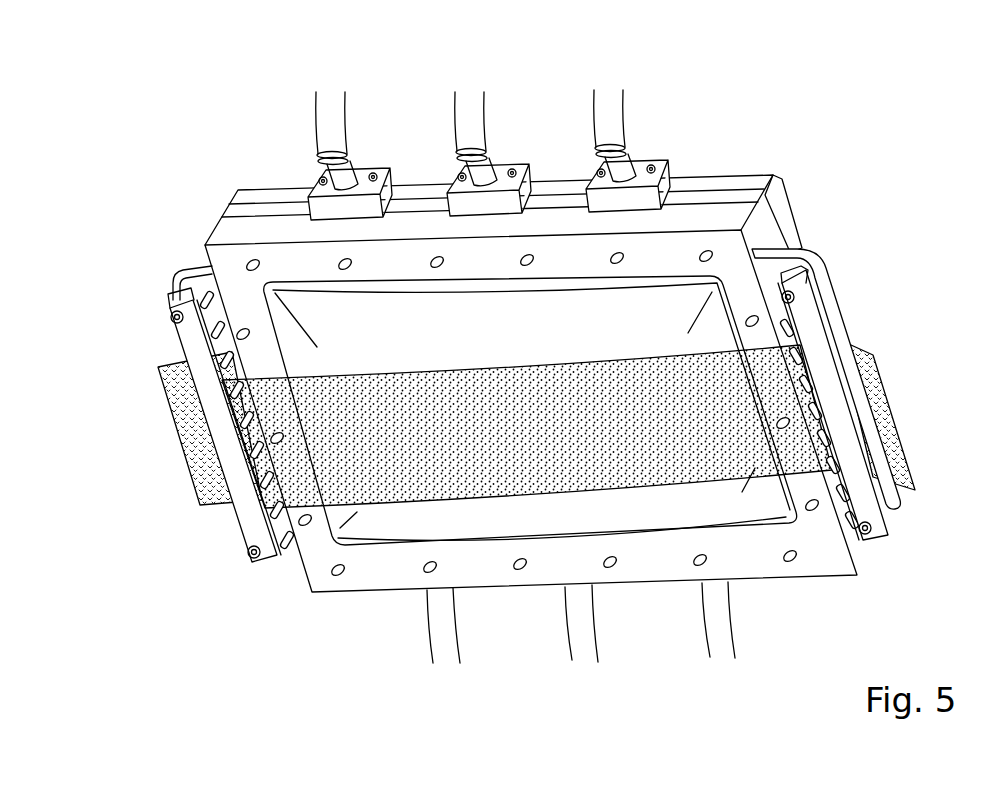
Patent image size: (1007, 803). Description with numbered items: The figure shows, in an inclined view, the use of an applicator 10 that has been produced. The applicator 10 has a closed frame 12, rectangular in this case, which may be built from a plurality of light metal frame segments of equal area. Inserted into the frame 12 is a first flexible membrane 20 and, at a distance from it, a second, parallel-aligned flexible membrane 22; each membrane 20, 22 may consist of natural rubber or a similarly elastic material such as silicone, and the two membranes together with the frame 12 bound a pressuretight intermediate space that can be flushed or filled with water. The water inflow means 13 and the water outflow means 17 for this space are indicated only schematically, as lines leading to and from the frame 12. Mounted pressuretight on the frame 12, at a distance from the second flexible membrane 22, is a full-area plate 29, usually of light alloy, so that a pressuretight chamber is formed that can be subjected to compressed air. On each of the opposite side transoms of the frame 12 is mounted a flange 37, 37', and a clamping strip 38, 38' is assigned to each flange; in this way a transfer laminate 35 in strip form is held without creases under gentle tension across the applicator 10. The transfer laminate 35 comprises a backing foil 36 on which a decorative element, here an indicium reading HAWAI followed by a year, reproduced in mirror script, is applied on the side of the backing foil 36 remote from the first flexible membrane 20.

The applicator 10 is at (840, 113).
The closed frame 12 is at (820, 563).
The water inflow means 13 is at (600, 118).
The water outflow means 17 is at (716, 630).
The first flexible membrane 20 is at (245, 222).
The second flexible membrane 22 is at (718, 182).
The full-area plate 29 is at (777, 198).
The transfer laminate 35 is at (371, 488).
The backing foil 36 is at (888, 418).
The flange 37 is at (826, 373).
The flange 37' is at (161, 270).
The clamping strip 38 is at (841, 403).
The clamping strip 38' is at (200, 425).